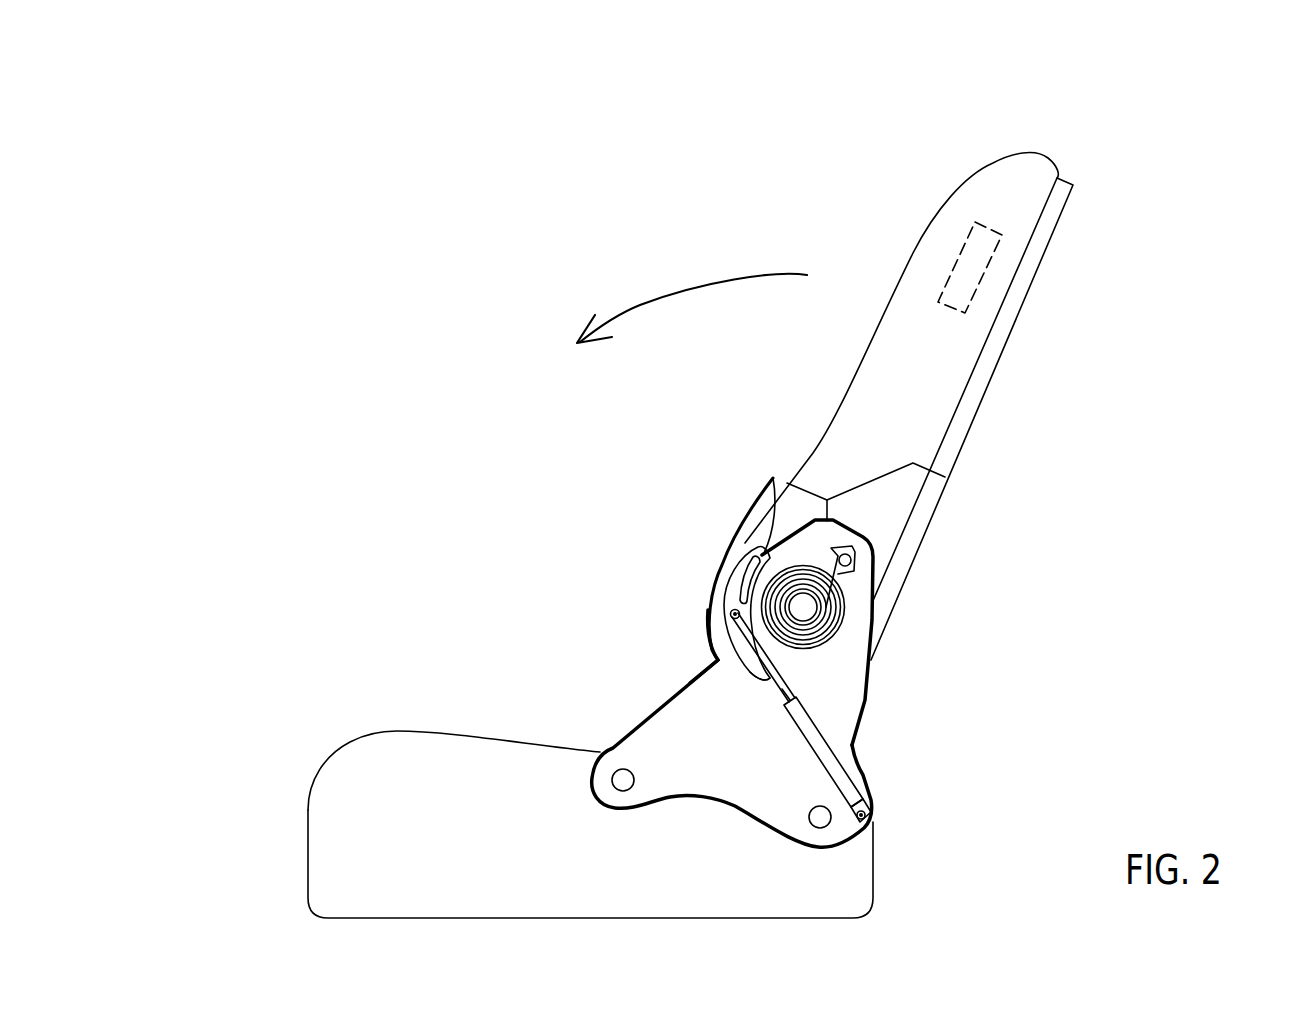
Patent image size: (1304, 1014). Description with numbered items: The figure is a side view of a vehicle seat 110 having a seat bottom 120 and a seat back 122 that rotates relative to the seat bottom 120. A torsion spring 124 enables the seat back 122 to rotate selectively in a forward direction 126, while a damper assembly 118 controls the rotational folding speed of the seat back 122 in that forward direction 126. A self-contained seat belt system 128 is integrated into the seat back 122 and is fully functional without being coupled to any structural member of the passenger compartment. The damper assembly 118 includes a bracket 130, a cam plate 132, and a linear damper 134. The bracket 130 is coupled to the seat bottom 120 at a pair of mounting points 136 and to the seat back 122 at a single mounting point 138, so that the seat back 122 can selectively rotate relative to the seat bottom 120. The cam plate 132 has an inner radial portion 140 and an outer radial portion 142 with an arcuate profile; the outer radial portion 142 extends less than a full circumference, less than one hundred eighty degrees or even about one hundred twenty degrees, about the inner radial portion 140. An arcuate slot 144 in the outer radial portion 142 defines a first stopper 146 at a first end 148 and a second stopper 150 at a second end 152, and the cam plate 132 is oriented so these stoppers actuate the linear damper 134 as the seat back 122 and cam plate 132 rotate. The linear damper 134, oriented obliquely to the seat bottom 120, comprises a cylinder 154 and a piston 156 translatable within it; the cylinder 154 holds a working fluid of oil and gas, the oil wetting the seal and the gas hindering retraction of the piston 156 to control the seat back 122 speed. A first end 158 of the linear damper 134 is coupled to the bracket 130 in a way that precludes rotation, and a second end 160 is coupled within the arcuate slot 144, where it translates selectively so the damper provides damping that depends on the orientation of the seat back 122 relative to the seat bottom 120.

The vehicle seat 110 is at (1190, 118).
The damper assembly 118 is at (896, 680).
The seat bottom 120 is at (338, 844).
The seat back 122 is at (1028, 182).
The torsion spring 124 is at (850, 618).
The forward direction 126 is at (745, 273).
The seat belt system 128 is at (1003, 257).
The bracket 130 is at (860, 757).
The cam plate 132 is at (718, 660).
The linear damper 134 is at (852, 747).
The mounting points 136 is at (635, 780).
The mounting point 138 is at (822, 607).
The inner radial portion 140 is at (843, 656).
The outer radial portion 142 is at (733, 678).
The arcuate slot 144 is at (742, 578).
The first stopper 146 is at (782, 660).
The first end 148 is at (752, 695).
The second stopper 150 is at (773, 490).
The second end 152 is at (740, 533).
The cylinder 154 is at (845, 787).
The piston 156 is at (787, 690).
The first end 158 is at (865, 815).
The second end 160 is at (730, 613).